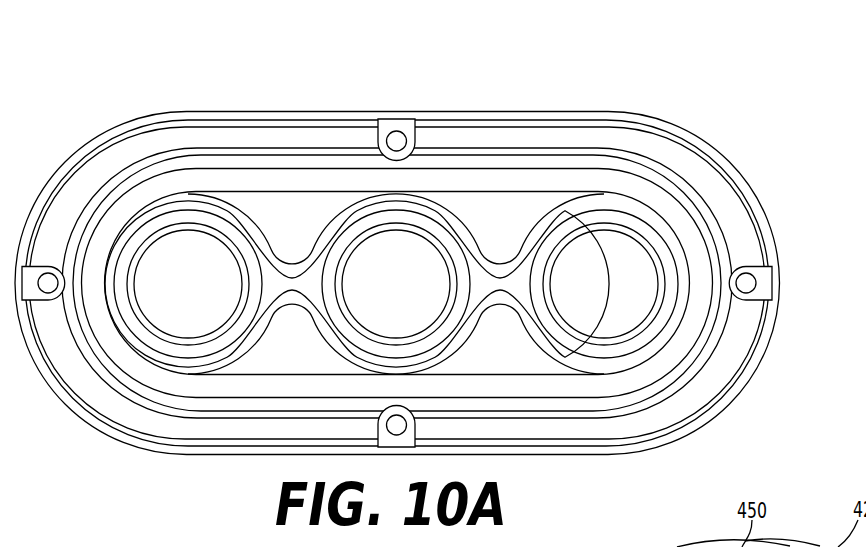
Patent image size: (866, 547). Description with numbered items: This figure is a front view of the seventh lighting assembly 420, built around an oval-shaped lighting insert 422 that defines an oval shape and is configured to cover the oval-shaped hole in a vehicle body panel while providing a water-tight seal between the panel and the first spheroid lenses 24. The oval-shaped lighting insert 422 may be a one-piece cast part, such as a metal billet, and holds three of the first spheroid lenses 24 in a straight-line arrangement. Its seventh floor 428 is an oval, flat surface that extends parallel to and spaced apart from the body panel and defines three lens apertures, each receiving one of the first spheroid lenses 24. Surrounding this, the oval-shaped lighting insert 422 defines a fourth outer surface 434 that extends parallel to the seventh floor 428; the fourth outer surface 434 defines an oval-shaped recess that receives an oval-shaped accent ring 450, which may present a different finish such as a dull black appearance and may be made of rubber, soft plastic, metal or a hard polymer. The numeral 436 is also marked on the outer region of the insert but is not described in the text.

The first spheroid lens 24 is at (190, 293).
The seventh lighting assembly 420 is at (54, 161).
The oval-shaped lighting insert 422 is at (661, 119).
The seventh floor 428 is at (297, 220).
The fourth outer surface 434 is at (743, 367).
The rib 436 is at (720, 407).
The oval-shaped accent ring 450 is at (517, 138).